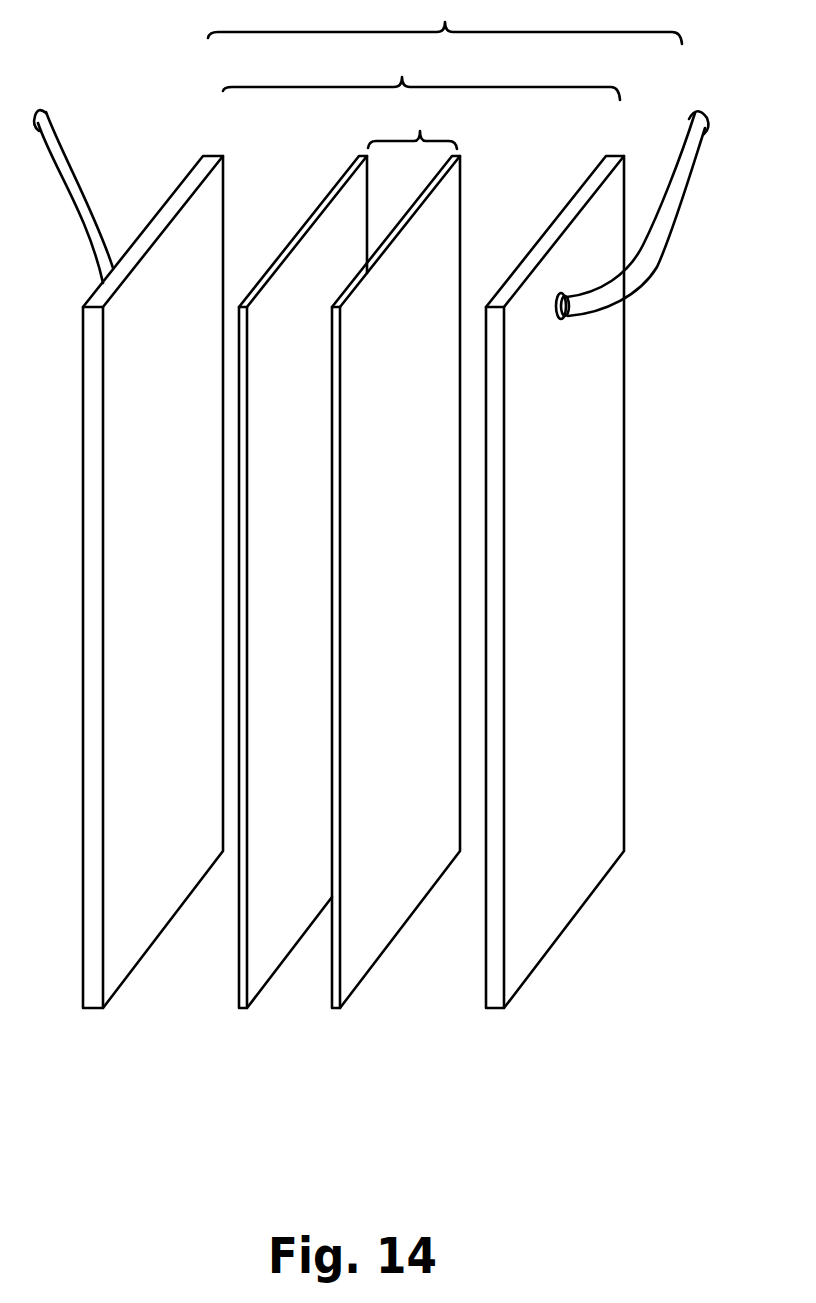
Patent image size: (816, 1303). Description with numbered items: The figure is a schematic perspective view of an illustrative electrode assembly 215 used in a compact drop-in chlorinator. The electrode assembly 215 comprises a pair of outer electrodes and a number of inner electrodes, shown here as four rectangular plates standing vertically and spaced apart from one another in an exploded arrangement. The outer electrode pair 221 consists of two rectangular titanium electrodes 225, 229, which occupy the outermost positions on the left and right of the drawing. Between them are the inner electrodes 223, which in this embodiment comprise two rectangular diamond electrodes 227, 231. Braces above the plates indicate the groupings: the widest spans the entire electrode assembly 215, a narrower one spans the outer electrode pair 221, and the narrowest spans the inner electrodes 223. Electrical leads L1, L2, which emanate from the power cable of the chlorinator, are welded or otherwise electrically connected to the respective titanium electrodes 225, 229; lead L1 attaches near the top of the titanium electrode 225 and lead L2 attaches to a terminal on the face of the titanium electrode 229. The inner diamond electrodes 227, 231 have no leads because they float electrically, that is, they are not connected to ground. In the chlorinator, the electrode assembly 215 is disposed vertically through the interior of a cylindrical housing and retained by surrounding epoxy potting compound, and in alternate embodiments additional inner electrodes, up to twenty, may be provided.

The electrode assembly 215 is at (445, 22).
The outer electrode pair 221 is at (421, 73).
The inner electrodes 223 is at (412, 126).
The titanium electrode 225 is at (93, 995).
The diamond electrode 227 is at (243, 1008).
The diamond electrode 231 is at (335, 1008).
The titanium electrode 229 is at (495, 995).
The electrical lead L1 is at (73, 193).
The electrical lead L2 is at (632, 212).